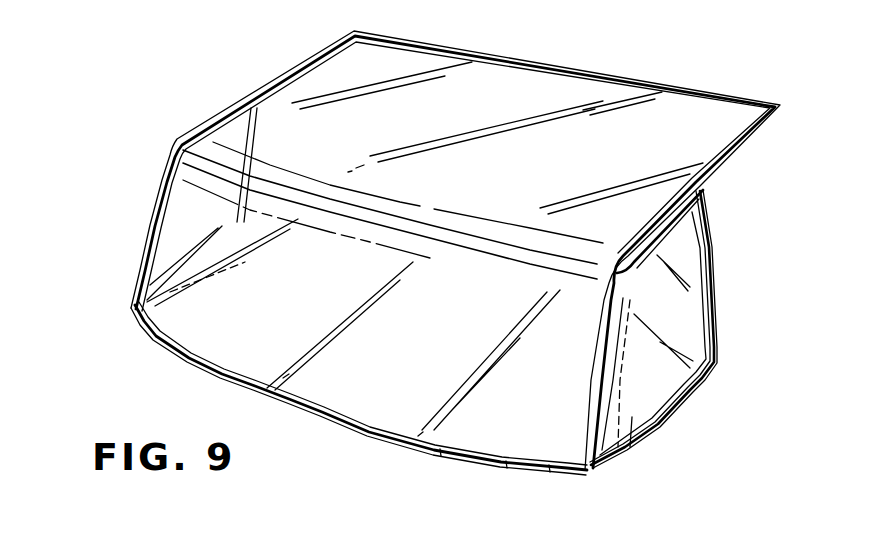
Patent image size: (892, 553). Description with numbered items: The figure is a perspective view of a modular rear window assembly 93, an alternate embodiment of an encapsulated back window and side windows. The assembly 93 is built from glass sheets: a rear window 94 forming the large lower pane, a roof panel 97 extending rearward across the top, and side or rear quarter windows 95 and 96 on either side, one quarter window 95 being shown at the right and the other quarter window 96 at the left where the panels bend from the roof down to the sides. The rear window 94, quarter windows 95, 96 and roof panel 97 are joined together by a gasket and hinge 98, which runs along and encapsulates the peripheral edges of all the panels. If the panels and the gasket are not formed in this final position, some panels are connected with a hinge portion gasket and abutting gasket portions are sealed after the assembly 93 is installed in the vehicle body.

The modular rear window assembly 93 is at (187, 105).
The rear window 94 is at (212, 333).
The rear quarter window 95 is at (690, 282).
The rear quarter window 96 is at (197, 223).
The roof panel 97 is at (605, 105).
The gasket and hinge 98 is at (407, 448).